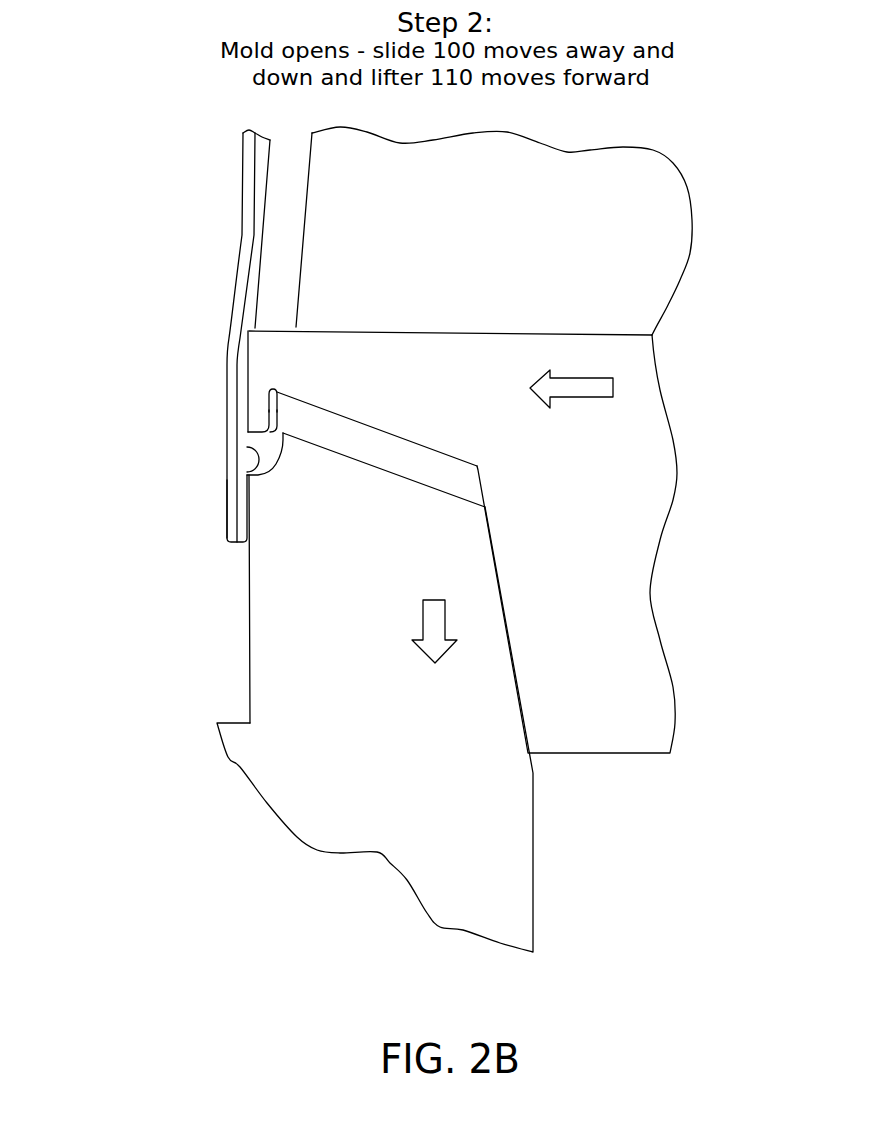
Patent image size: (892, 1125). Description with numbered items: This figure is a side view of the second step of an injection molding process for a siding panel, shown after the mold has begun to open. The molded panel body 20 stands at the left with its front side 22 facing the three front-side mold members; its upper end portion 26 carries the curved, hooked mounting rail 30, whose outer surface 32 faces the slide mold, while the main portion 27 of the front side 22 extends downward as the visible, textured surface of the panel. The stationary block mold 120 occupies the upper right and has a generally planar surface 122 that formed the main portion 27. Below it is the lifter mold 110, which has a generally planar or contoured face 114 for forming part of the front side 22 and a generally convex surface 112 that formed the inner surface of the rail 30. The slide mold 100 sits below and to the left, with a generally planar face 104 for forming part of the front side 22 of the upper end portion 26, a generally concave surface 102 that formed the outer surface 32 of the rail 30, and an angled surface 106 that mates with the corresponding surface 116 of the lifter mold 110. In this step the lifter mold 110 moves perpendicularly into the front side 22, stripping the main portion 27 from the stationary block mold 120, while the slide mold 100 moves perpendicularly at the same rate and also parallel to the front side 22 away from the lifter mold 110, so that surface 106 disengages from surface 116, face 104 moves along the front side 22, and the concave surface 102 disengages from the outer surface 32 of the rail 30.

The panel body 20 is at (253, 237).
The front side 22 is at (247, 450).
The upper end portion 26 is at (215, 510).
The main portion 27 is at (267, 200).
The mounting rail 30 is at (268, 422).
The outer surface 32 is at (278, 413).
The slide mold 100 is at (421, 801).
The concave surface 102 is at (276, 464).
The planar face 104 is at (250, 577).
The surface 106 is at (445, 496).
The lifter mold 110 is at (609, 553).
The convex surface 112 is at (268, 406).
The face 114 is at (248, 365).
The surface 116 is at (370, 422).
The stationary block mold 120 is at (536, 233).
The planar surface 122 is at (305, 240).